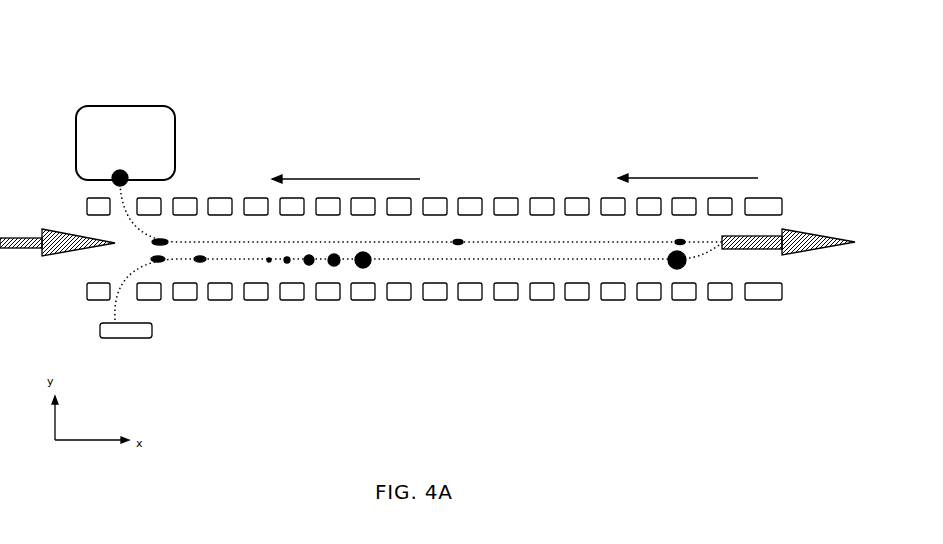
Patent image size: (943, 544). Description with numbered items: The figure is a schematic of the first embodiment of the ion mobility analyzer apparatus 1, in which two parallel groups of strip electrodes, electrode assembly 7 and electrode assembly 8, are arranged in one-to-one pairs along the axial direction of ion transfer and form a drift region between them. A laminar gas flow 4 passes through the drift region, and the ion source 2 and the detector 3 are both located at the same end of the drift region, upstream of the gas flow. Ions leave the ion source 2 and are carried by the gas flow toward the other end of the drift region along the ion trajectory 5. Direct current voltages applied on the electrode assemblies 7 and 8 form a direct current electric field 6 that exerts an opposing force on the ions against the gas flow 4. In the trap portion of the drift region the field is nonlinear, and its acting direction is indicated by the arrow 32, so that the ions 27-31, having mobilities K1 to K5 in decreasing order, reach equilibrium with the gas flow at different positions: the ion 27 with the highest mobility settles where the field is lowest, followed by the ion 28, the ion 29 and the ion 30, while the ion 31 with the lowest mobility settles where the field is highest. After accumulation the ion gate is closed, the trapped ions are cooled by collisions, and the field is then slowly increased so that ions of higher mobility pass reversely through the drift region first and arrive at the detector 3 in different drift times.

The ion mobility analyzer apparatus 1 is at (442, 202).
The ion source 2 is at (125, 113).
The detector 3 is at (126, 351).
The gas flow 4 is at (803, 242).
The ion trajectory 5 is at (418, 252).
The direct current electric field 6 is at (346, 163).
The electrode assembly 7 is at (419, 208).
The electrode assembly 8 is at (419, 293).
The ion 27 is at (268, 262).
The ion 28 is at (287, 264).
The ion 29 is at (309, 265).
The ion 30 is at (335, 266).
The ion 31 is at (365, 268).
The ions with different ion mobilities 27-31 is at (82, 173).
The acting direction of the nonlinear direct current electric field 32 is at (688, 164).